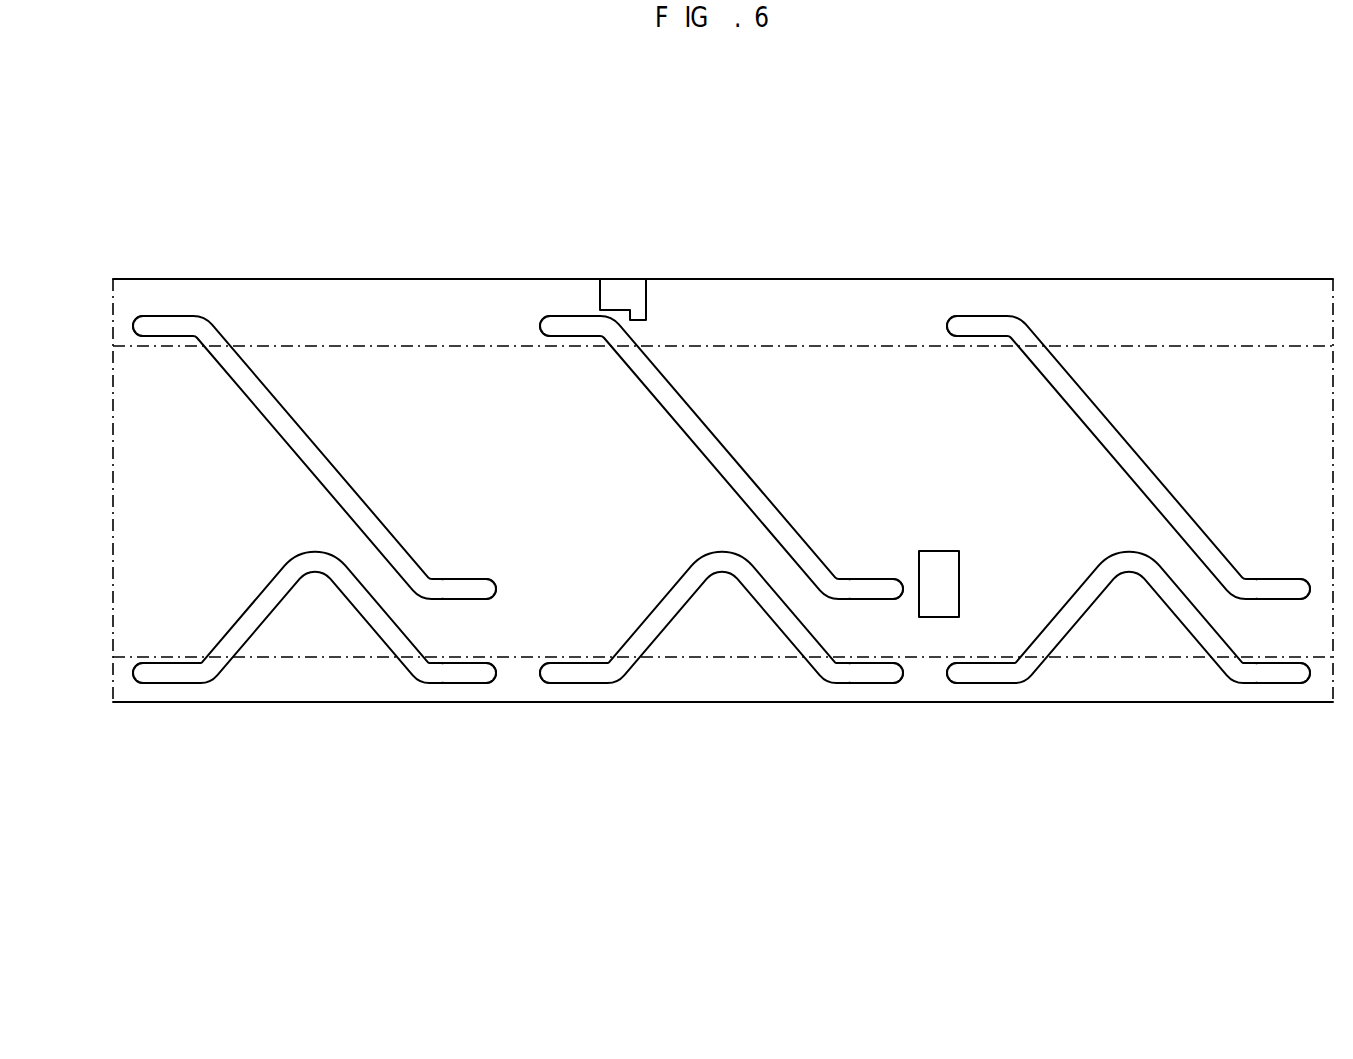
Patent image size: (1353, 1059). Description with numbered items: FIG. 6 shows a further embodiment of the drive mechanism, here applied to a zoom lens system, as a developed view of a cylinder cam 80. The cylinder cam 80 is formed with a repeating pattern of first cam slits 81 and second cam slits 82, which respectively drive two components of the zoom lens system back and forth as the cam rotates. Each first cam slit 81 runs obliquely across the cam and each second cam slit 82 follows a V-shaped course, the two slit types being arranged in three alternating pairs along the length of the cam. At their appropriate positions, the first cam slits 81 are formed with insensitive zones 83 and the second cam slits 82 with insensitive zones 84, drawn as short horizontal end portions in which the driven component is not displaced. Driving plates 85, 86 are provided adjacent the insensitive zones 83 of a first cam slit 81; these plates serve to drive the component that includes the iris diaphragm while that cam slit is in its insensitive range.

The cylinder cam 80 is at (723, 446).
The first cam slits 81 is at (721, 457).
The second cam slits 82 is at (721, 574).
The insensitive zones 83 is at (717, 390).
The insensitive zones 84 is at (715, 739).
The driving plate 85 is at (623, 255).
The driving plate 86 is at (955, 546).